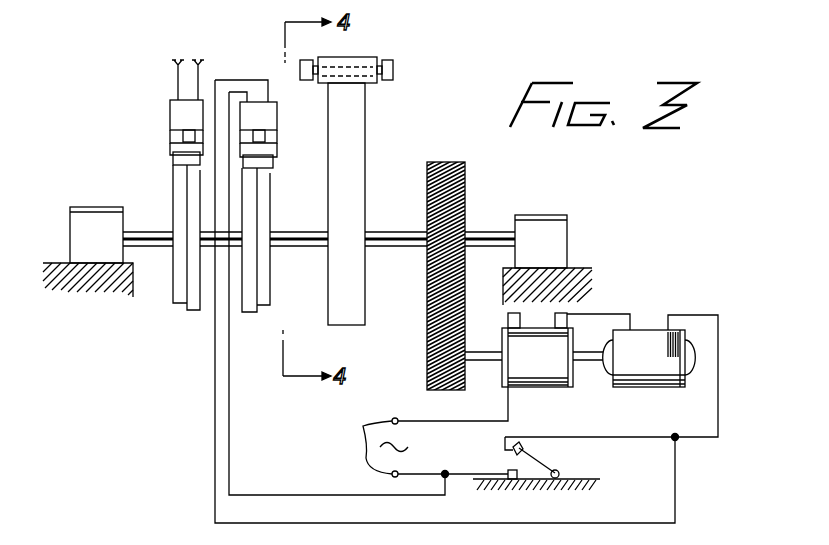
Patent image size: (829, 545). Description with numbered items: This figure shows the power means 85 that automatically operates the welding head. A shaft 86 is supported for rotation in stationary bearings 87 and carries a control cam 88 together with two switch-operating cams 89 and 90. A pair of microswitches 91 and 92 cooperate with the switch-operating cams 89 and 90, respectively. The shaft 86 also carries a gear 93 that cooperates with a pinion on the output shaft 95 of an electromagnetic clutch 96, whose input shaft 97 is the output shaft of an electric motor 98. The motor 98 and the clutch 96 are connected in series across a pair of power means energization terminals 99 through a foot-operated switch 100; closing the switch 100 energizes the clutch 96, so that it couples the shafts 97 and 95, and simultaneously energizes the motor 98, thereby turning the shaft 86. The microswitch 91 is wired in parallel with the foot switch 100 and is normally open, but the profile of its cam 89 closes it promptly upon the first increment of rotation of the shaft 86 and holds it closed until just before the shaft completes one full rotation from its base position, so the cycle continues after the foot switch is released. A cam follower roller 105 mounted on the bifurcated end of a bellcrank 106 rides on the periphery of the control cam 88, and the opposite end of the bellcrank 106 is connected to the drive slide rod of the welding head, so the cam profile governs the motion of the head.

The power means 85 is at (412, 87).
The shaft 86 is at (378, 233).
The stationary bearings 87 is at (87, 212).
The control cam 88 is at (365, 133).
The switch-operating cam 89 is at (270, 196).
The switch-operating cam 90 is at (155, 185).
The microswitch 91 is at (272, 112).
The microswitch 92 is at (183, 115).
The gear 93 is at (455, 162).
The output shaft 95 is at (478, 352).
The electromagnetic clutch 96 is at (530, 385).
The input shaft 97 is at (583, 343).
The electric motor 98 is at (628, 387).
The power means energization terminals 99 is at (363, 426).
The foot-operated switch 100 is at (537, 452).
The cam follower roller 105 is at (340, 57).
The bellcrank 106 is at (393, 65).